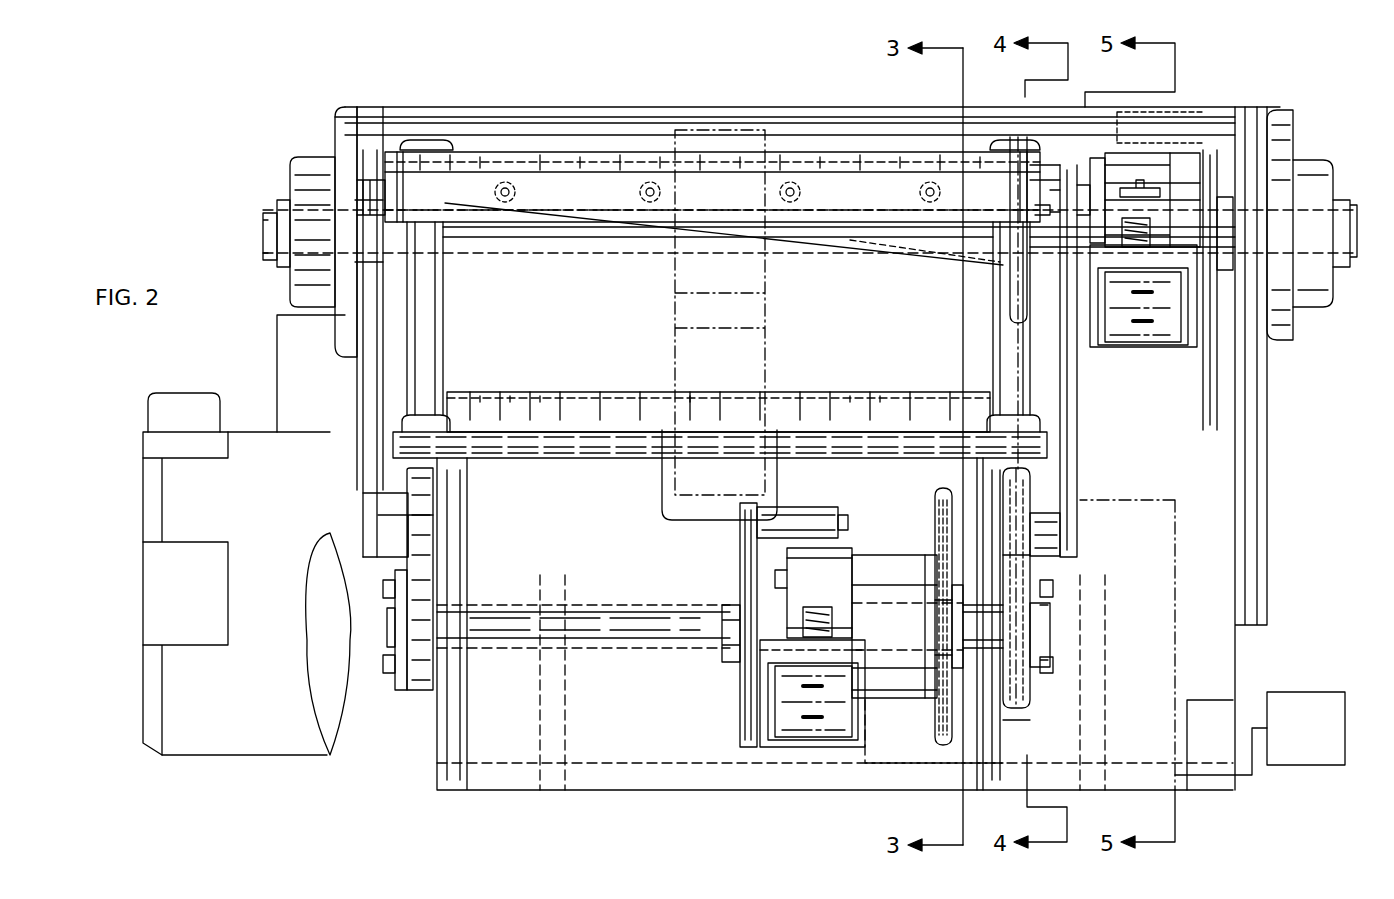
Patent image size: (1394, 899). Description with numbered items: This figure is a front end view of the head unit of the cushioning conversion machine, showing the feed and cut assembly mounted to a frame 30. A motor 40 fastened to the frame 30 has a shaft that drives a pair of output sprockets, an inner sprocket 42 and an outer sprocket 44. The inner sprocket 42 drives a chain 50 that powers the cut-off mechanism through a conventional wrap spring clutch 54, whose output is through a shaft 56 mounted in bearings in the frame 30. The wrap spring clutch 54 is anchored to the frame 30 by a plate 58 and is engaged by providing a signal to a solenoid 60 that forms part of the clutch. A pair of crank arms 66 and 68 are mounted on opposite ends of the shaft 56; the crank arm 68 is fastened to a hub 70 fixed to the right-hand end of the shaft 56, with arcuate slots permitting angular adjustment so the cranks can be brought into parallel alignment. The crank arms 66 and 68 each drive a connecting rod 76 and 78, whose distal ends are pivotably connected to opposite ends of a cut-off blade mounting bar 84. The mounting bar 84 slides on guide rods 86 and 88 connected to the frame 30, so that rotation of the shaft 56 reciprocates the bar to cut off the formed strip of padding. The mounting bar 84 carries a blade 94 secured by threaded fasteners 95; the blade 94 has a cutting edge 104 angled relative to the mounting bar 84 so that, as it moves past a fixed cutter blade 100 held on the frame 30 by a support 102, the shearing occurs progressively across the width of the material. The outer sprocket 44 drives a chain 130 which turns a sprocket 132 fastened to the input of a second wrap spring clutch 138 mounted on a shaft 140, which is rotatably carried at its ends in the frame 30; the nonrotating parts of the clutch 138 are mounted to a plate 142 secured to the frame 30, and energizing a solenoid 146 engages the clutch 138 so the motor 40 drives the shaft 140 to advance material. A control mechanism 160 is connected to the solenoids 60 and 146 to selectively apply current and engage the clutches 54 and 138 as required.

The frame 30 is at (487, 742).
The motor 40 is at (268, 690).
The inner sprocket 42 is at (937, 492).
The outer sprocket 44 is at (1025, 705).
The chain 50 is at (938, 712).
The wrap spring clutch 54 is at (902, 556).
The shaft 56 is at (642, 610).
The plate 58 is at (745, 707).
The solenoid 60 is at (800, 740).
The crank arm 66 is at (416, 688).
The crank arm 68 is at (1030, 512).
The hub 70 is at (1042, 686).
The connecting rod 76 is at (372, 375).
The connecting rod 78 is at (1070, 487).
The cut-off blade mounting bar 84 is at (575, 150).
The guide rod 86 is at (432, 335).
The guide rod 88 is at (1000, 352).
The blade 94 is at (952, 280).
The threaded fasteners 95 is at (505, 182).
The fixed cutter blade 100 is at (487, 398).
The support 102 is at (568, 412).
The cutting edge 104 is at (786, 245).
The chain 130 is at (1015, 365).
The sprocket 132 is at (1035, 152).
The wrap spring clutch 138 is at (1090, 145).
The shaft 140 is at (1357, 230).
The plate 142 is at (1150, 345).
The solenoid 146 is at (1192, 310).
The control mechanism 160 is at (1307, 692).